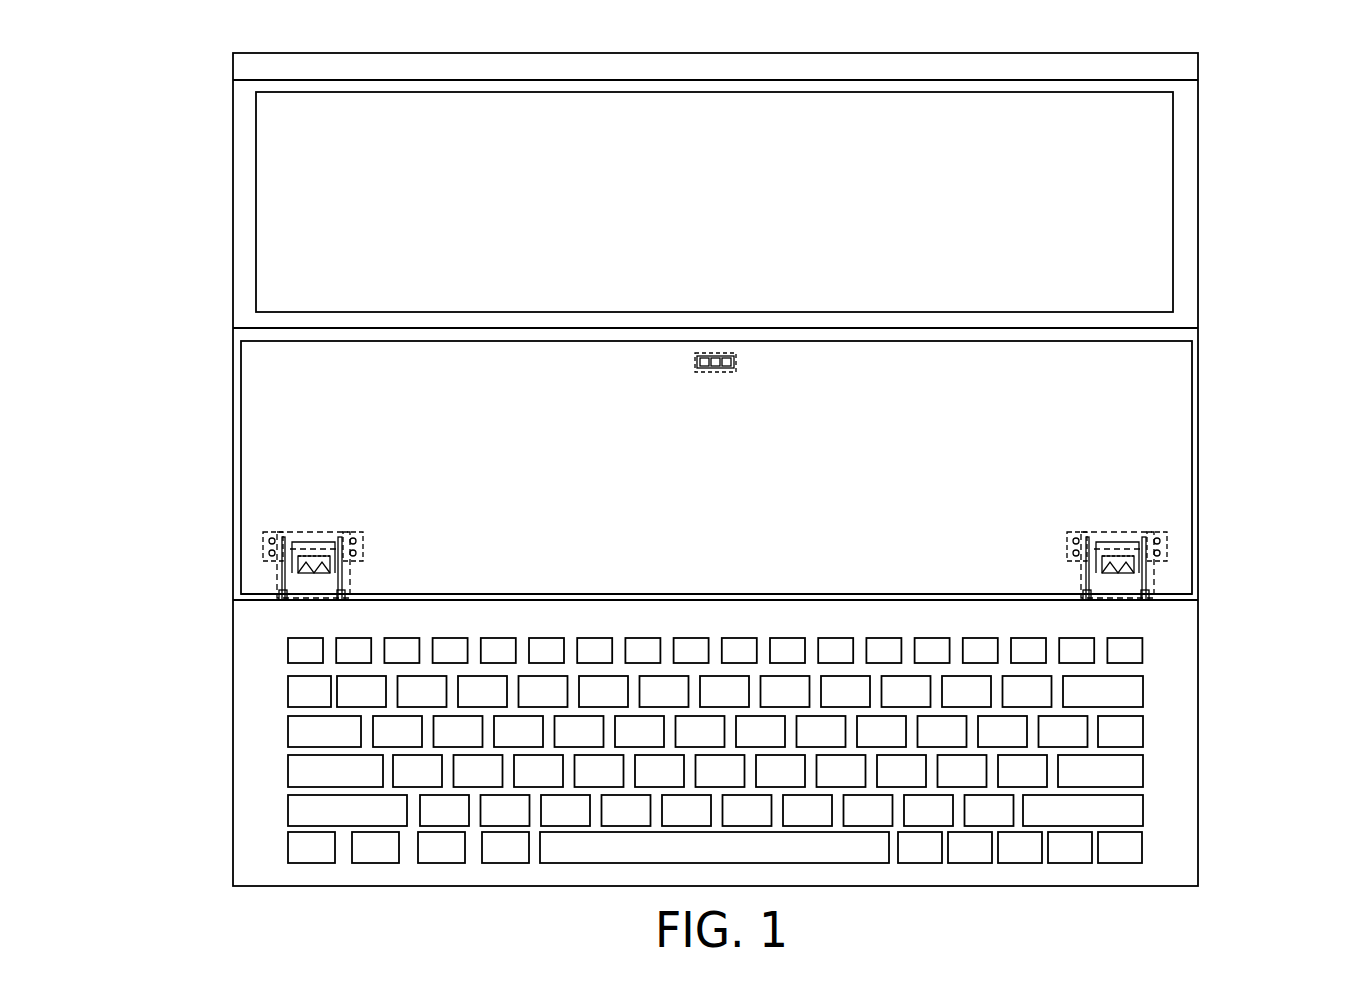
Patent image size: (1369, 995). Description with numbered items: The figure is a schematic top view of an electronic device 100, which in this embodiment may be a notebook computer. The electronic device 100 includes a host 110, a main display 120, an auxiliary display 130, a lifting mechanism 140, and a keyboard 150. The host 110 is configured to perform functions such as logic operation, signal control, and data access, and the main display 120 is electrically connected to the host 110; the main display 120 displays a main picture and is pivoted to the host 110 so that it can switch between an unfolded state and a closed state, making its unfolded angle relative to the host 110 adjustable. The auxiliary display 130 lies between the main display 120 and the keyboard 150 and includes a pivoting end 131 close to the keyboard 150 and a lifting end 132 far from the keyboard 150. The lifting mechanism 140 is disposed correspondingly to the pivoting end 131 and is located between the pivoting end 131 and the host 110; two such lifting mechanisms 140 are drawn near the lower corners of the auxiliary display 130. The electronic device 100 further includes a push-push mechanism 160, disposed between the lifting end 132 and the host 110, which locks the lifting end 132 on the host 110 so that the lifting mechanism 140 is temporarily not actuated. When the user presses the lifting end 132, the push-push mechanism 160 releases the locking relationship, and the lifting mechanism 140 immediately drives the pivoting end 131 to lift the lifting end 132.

The electronic device 100 is at (1343, 904).
The host 110 is at (1170, 650).
The main display 120 is at (1183, 246).
The auxiliary display 130 is at (1148, 441).
The pivoting end 131 is at (1175, 574).
The lifting end 132 is at (1125, 357).
The lifting mechanism 140 is at (304, 507).
The keyboard 150 is at (1162, 770).
The push-push mechanism 160 is at (746, 362).